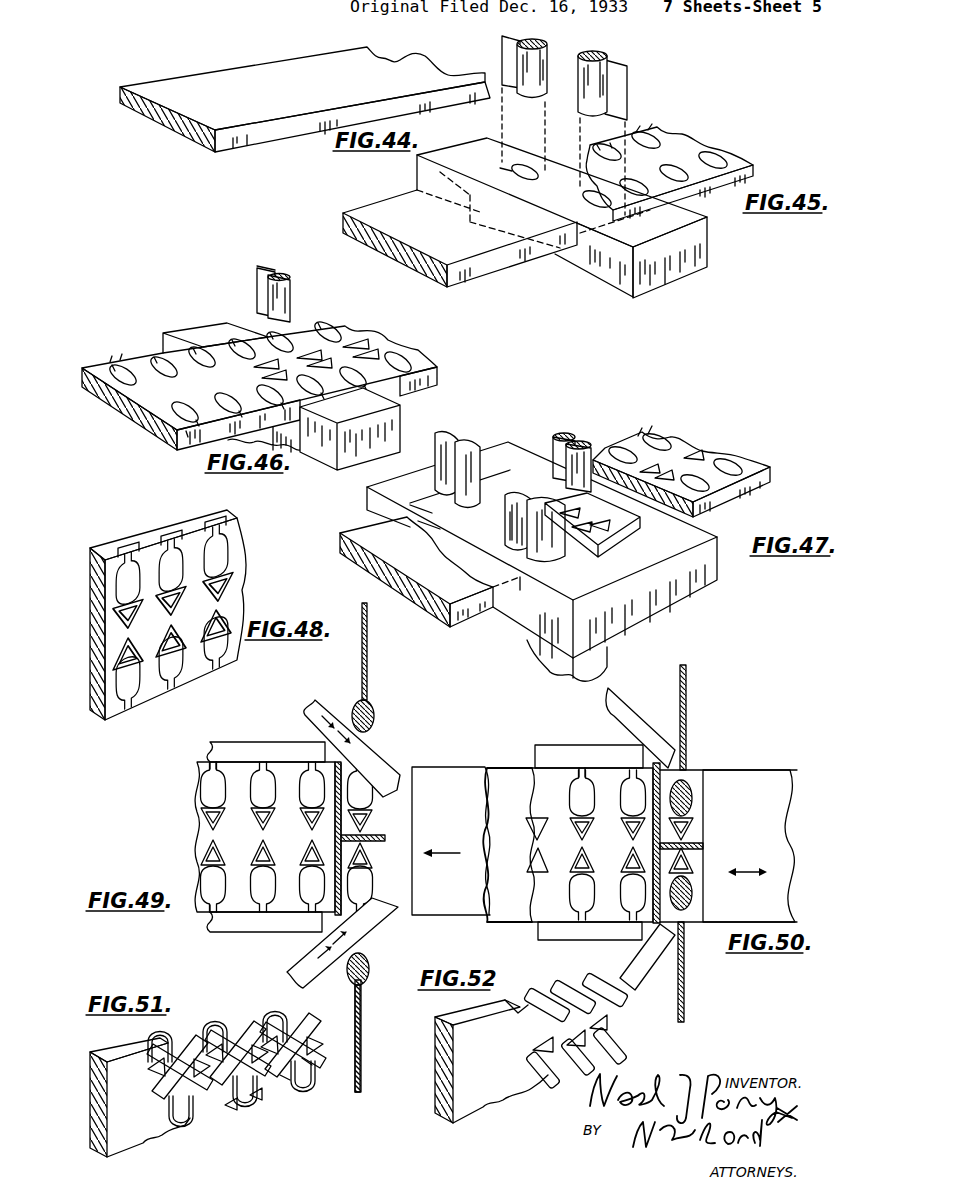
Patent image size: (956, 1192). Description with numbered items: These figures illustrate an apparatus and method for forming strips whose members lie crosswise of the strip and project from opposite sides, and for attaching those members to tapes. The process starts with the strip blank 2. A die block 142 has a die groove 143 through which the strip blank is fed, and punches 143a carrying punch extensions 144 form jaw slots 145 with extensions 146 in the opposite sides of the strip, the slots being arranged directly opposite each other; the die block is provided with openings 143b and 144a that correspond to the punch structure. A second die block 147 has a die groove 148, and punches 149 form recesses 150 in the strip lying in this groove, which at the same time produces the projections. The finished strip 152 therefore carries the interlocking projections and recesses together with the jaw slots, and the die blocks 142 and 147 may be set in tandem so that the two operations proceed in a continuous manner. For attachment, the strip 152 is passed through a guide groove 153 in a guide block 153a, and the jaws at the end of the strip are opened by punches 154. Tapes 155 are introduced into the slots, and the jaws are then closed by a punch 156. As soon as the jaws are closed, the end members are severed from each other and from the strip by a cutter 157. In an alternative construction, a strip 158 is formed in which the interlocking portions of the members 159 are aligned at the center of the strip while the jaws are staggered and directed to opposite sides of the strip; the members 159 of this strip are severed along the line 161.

In FIG. 44, the strip blank 2 is at (258, 138).
In FIG. 45, the strip blank 2 is at (460, 285).
In FIG. 47, the strip blank 2 is at (450, 630).
In FIG. 51, the strip blank 2 is at (110, 1158).
In FIG. 52, the strip blank 2 is at (478, 1118).
In FIG. 45, the die block 142 is at (618, 285).
In FIG. 47, the die block 142 is at (515, 636).
In FIG. 45, the die groove 143 is at (583, 240).
In FIG. 47, the die groove 143 is at (525, 595).
In FIG. 45, the punches 143a is at (605, 58).
In FIG. 47, the punches 143a is at (465, 440).
In FIG. 47, the die block openings 143b is at (480, 530).
In FIG. 45, the punch extensions 144 is at (540, 44).
In FIG. 47, the punch extensions 144 is at (440, 432).
In FIG. 45, the die block openings 144a is at (505, 168).
In FIG. 47, the die block openings 144a is at (428, 498).
In FIG. 45, the jaw slots 145 is at (666, 138).
In FIG. 46, the jaw slots 145 is at (118, 380).
In FIG. 47, the jaw slots 145 is at (660, 434).
In FIG. 48, the jaw slots 145 is at (228, 565).
In FIG. 49, the jaw slots 145 is at (206, 790).
In FIG. 50, the jaw slots 145 is at (572, 790).
In FIG. 45, the slot extensions 146 is at (642, 128).
In FIG. 46, the slot extensions 146 is at (112, 362).
In FIG. 47, the slot extensions 146 is at (645, 428).
In FIG. 48, the slot extensions 146 is at (218, 520).
In FIG. 49, the slot extensions 146 is at (211, 768).
In FIG. 50, the slot extensions 146 is at (578, 770).
In FIG. 46, the die block 147 is at (340, 466).
In FIG. 47, the die block 147 is at (678, 598).
In FIG. 46, the die groove 148 is at (350, 429).
In FIG. 47, the die groove 148 is at (625, 534).
In FIG. 46, the punches 149 is at (257, 288).
In FIG. 47, the punches 149 is at (560, 432).
In FIG. 46, the recesses 150 is at (254, 368).
In FIG. 47, the recesses 150 is at (688, 440).
In FIG. 46, the finished strip 152 is at (432, 362).
In FIG. 48, the finished strip 152 is at (93, 713).
In FIG. 49, the finished strip 152 is at (205, 833).
In FIG. 50, the finished strip 152 is at (530, 878).
In FIG. 49, the guide groove 153 is at (232, 915).
In FIG. 50, the guide groove 153 is at (533, 752).
In FIG. 49, the guide block 153a is at (257, 930).
In FIG. 50, the guide block 153a is at (603, 745).
In FIG. 49, the punches 154 is at (368, 752).
In FIG. 50, the punches 154 is at (626, 704).
In FIG. 49, the tapes 155 is at (368, 694).
In FIG. 50, the tapes 155 is at (687, 730).
In FIG. 51, the tapes 155 is at (361, 1020).
In FIG. 49, the punch 156 is at (480, 917).
In FIG. 50, the punch 156 is at (782, 912).
In FIG. 49, the cutter 157 is at (385, 840).
In FIG. 50, the cutter 157 is at (705, 845).
In FIG. 51, the strip 158 is at (306, 1030).
In FIG. 52, the strip 158 is at (625, 1018).
In FIG. 51, the members 159 is at (255, 1104).
In FIG. 52, the members 159 is at (618, 1047).
In FIG. 51, the severing line 161 is at (310, 1062).